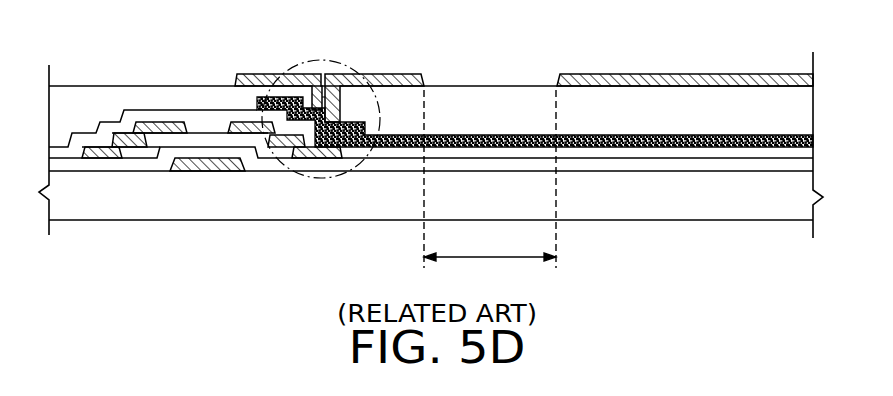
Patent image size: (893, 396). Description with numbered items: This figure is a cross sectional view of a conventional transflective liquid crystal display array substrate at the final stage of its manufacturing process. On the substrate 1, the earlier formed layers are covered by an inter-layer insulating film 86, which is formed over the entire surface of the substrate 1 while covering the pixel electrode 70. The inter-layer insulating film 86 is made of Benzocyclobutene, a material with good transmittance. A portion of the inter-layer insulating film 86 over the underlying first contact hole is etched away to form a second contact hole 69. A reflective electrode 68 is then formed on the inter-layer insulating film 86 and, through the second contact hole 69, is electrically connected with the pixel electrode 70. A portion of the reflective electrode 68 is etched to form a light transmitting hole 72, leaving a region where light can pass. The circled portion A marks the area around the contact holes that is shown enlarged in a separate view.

The substrate 1 is at (363, 204).
The reflective electrode 68 is at (394, 73).
The second contact hole 69 is at (323, 76).
The pixel electrode 70 is at (658, 136).
The light transmitting hole 72 is at (490, 179).
The inter-layer insulating film 86 is at (482, 93).
The portion A is at (322, 180).